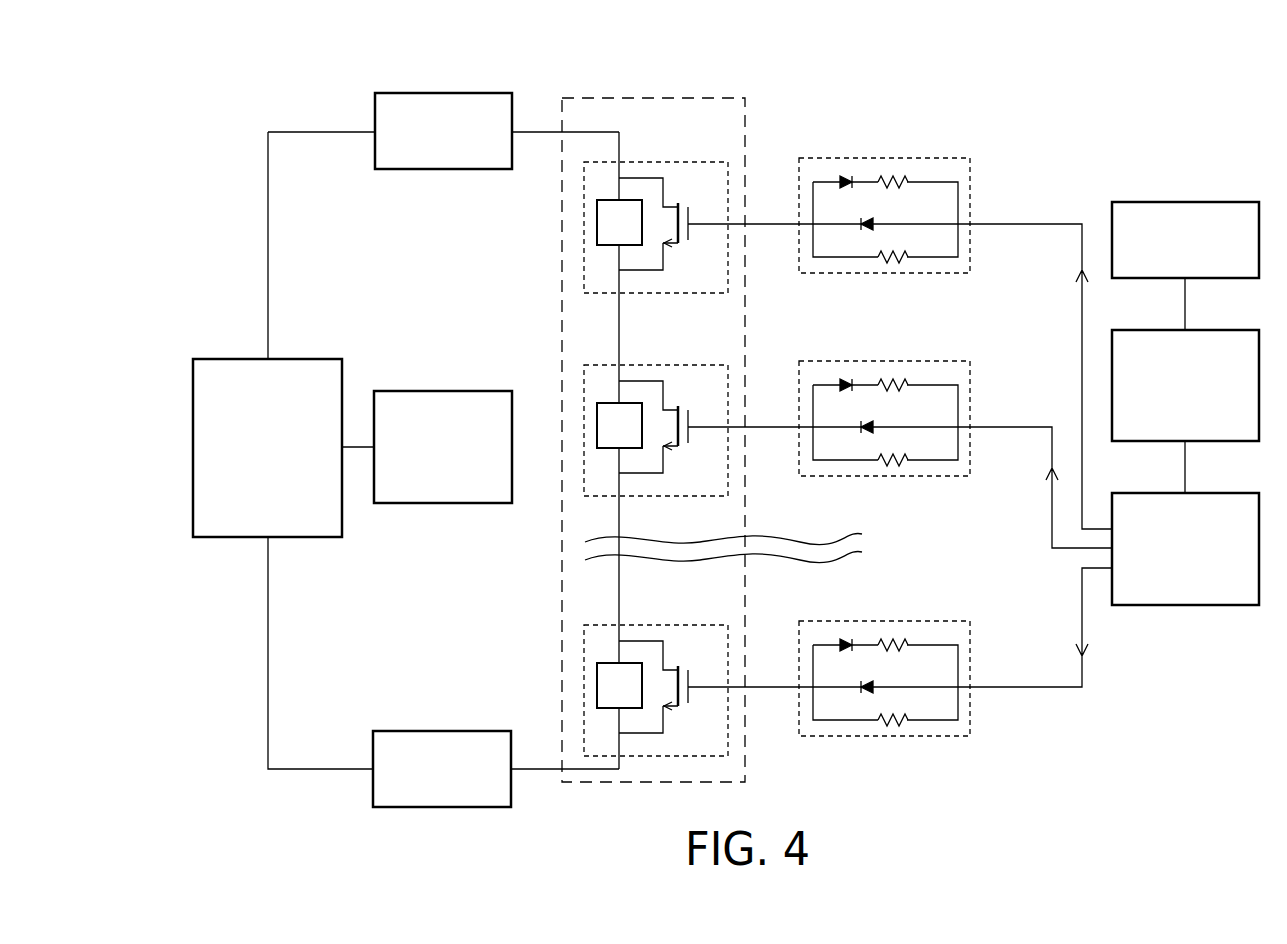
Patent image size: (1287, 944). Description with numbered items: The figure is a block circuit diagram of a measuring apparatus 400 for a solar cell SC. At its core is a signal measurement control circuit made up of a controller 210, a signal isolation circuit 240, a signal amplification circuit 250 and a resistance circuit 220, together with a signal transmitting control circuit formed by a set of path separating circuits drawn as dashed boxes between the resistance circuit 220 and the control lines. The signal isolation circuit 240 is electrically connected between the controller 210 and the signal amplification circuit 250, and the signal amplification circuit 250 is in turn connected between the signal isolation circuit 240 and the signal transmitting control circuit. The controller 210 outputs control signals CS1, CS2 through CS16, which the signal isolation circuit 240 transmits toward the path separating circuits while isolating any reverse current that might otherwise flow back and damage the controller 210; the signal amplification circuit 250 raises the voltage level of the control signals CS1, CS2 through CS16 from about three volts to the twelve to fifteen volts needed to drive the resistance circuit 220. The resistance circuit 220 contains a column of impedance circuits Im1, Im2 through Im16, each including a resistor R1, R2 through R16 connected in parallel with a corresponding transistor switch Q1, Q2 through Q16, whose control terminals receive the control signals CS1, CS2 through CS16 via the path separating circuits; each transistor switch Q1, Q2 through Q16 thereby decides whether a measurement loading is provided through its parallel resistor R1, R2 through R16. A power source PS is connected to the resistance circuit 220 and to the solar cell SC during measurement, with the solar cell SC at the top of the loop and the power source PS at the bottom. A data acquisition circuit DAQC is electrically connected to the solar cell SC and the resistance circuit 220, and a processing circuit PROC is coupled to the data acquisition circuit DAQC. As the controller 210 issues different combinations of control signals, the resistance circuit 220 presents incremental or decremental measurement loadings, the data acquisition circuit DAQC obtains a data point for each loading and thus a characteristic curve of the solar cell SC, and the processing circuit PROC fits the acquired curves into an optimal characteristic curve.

The measuring apparatus 400 is at (1253, 798).
The controller 210 is at (1214, 201).
The resistance circuit 220 is at (683, 97).
The signal isolation circuit 240 is at (1214, 329).
The signal amplification circuit 250 is at (1214, 492).
The solar cell SC is at (470, 93).
The data acquisition circuit DAQC is at (298, 357).
The processing circuit PROC is at (440, 390).
The power source PS is at (441, 769).
The impedance circuit Im1 is at (691, 203).
The impedance circuit Im2 is at (691, 406).
The impedance circuit Im16 is at (691, 666).
The resistor R1 is at (619, 222).
The resistor R2 is at (619, 425).
The resistor R16 is at (619, 685).
The transistor switch Q1 is at (680, 160).
The transistor switch Q2 is at (709, 431).
The transistor switch Q16 is at (709, 691).
The control signal CS1 is at (1041, 376).
The control signal CS2 is at (1041, 487).
The control signal CS16 is at (1041, 627).